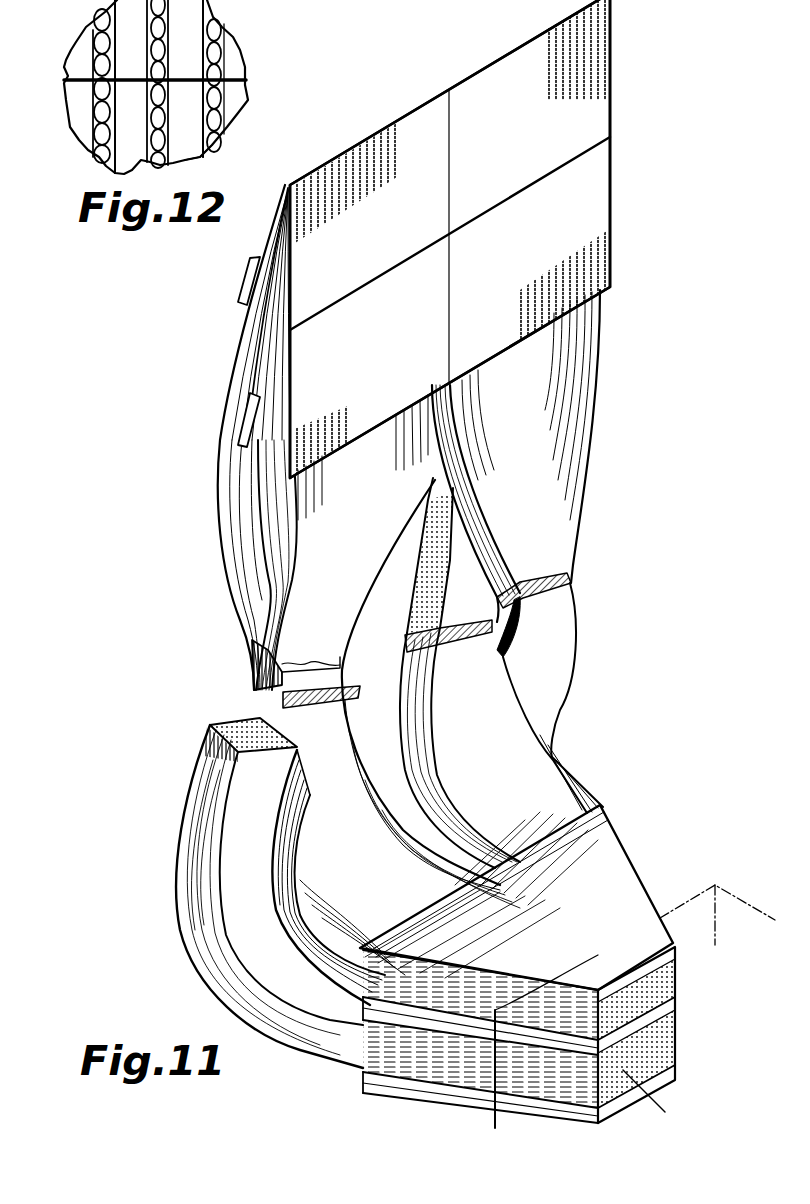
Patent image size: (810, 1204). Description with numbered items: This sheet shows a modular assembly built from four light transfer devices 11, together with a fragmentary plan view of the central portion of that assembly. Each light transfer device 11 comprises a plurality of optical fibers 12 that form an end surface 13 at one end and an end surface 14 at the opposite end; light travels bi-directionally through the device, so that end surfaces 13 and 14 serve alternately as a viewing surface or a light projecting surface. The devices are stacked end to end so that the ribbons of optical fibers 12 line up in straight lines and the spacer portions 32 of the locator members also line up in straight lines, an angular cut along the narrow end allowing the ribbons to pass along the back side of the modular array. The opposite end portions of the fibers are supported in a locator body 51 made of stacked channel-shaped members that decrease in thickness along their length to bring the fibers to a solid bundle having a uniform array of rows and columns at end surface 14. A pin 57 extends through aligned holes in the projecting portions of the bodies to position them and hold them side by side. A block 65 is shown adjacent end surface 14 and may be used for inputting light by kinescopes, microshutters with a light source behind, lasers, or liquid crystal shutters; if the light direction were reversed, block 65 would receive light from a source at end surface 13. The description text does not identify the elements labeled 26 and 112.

In FIG. 12, the light transfer device 11 is at (86, 19).
In FIG. 11, the light transfer device 11 is at (493, 62).
In FIG. 12, the optical fibers 12 is at (216, 18).
In FIG. 11, the end surface 13 is at (428, 122).
In FIG. 11, the end surface 14 is at (628, 990).
In FIG. 11, the curved strip 26 is at (192, 831).
In FIG. 12, the spacer portion 32 is at (197, 159).
In FIG. 11, the locator body 51 is at (420, 913).
In FIG. 11, the pin 57 is at (256, 260).
In FIG. 11, the block 65 is at (692, 895).
In FIG. 12, the transverse strand 112 is at (77, 152).